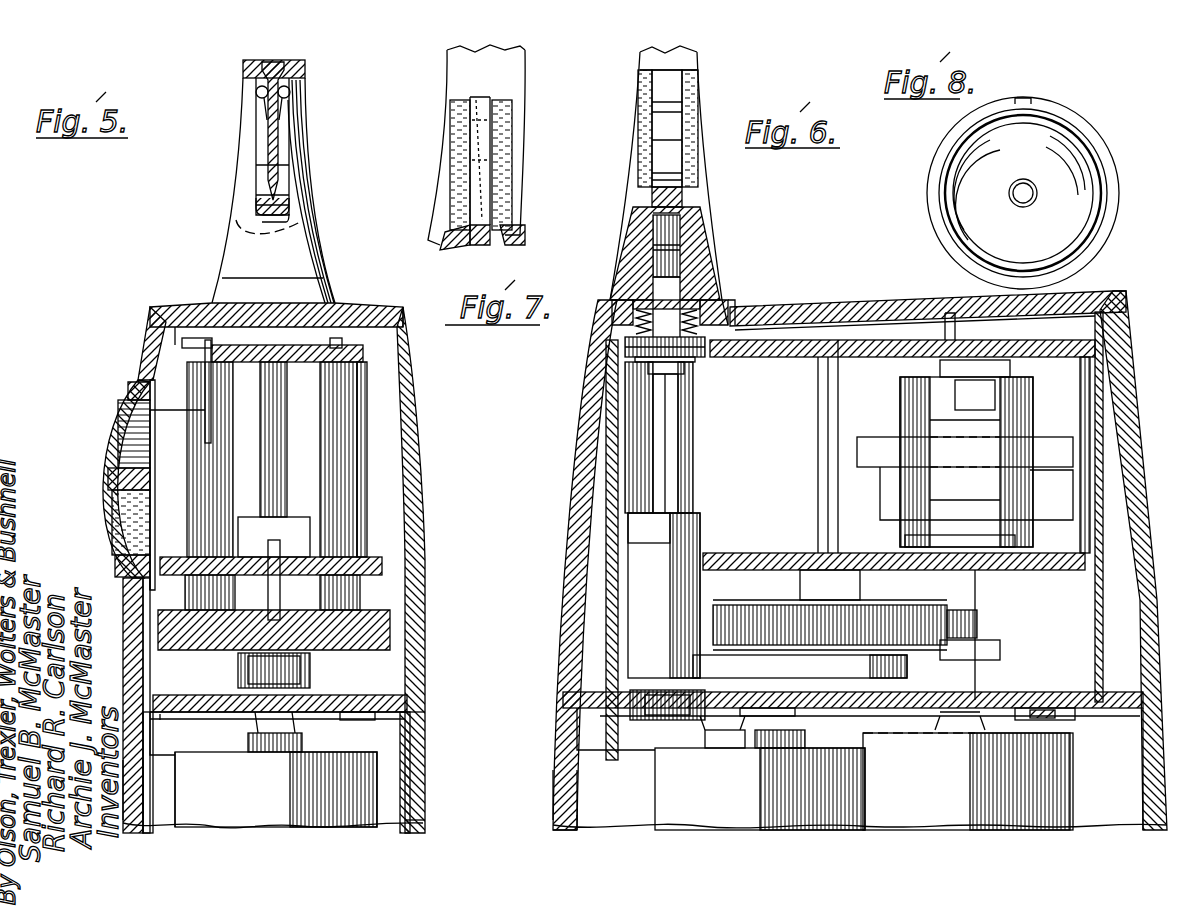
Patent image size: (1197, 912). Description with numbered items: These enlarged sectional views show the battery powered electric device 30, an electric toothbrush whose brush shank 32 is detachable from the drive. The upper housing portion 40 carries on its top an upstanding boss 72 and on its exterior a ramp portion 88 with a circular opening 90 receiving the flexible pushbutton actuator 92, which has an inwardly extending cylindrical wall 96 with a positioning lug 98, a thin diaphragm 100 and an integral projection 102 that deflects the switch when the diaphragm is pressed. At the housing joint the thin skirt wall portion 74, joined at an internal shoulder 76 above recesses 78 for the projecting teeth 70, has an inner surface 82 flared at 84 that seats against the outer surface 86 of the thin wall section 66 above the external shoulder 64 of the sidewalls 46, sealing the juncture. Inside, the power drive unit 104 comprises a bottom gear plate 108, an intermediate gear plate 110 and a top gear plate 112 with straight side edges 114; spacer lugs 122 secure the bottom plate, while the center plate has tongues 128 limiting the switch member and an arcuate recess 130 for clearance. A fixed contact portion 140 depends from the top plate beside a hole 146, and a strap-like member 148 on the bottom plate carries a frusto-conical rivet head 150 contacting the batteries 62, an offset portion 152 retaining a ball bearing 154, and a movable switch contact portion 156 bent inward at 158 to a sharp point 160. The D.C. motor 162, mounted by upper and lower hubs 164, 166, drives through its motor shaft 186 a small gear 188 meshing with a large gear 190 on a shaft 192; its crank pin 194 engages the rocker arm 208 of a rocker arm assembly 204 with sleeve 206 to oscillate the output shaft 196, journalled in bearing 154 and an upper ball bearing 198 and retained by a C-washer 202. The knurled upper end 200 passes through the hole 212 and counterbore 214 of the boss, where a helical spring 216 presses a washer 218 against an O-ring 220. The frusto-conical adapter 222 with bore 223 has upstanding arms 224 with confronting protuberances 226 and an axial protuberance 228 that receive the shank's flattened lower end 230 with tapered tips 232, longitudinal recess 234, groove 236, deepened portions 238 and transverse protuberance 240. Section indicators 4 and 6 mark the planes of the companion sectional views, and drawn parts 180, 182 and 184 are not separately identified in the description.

In FIG. 6, the section line 4- 4 is at (1160, 372).
In FIG. 5, the section line 6— 6 is at (292, 48).
In FIG. 5, the electric device 30 is at (428, 470).
In FIG. 6, the electric device 30 is at (572, 430).
In FIG. 7, the shank 32 is at (512, 62).
In FIG. 6, the shank 32 is at (682, 55).
In FIG. 5, the upper housing portion 40 is at (412, 390).
In FIG. 6, the upper housing portion 40 is at (1135, 388).
In FIG. 5, the sidewalls 46 is at (427, 830).
In FIG. 6, the sidewalls 46 is at (580, 820).
In FIG. 5, the batteries 62 is at (380, 775).
In FIG. 6, the batteries 62 is at (660, 775).
In FIG. 5, the external shoulder 64 is at (427, 800).
In FIG. 6, the external shoulder 64 is at (553, 818).
In FIG. 5, the thin wall section 66 is at (400, 742).
In FIG. 5, the projecting teeth 70 is at (150, 727).
In FIG. 5, the upstanding boss 72 is at (318, 296).
In FIG. 6, the upstanding boss 72 is at (726, 300).
In FIG. 5, the thin wall portion 74 is at (150, 774).
In FIG. 5, the internal shoulder 76 is at (160, 712).
In FIG. 6, the internal shoulder 76 is at (570, 700).
In FIG. 5, the recesses 78 is at (195, 700).
In FIG. 5, the inner surface 82 is at (160, 750).
In FIG. 6, the inner surface 82 is at (565, 725).
In FIG. 5, the flared portion 84 is at (135, 814).
In FIG. 6, the flared portion 84 is at (555, 790).
In FIG. 5, the outer surface 86 is at (148, 794).
In FIG. 6, the outer surface 86 is at (575, 790).
In FIG. 5, the ramp portion 88 is at (125, 590).
In FIG. 5, the circular opening 90 is at (150, 597).
In FIG. 5, the pushbutton actuator 92 is at (100, 508).
In FIG. 8, the pushbutton actuator 92 is at (1118, 152).
In FIG. 5, the cylindrical wall 96 is at (120, 475).
In FIG. 8, the cylindrical wall 96 is at (947, 172).
In FIG. 5, the lug 98 is at (150, 360).
In FIG. 8, the lug 98 is at (1023, 97).
In FIG. 5, the diaphragm 100 is at (125, 405).
In FIG. 8, the diaphragm 100 is at (1080, 137).
In FIG. 5, the integral projection 102 is at (140, 485).
In FIG. 8, the integral projection 102 is at (1025, 180).
In FIG. 5, the power drive unit 104 is at (380, 521).
In FIG. 5, the bottom gear plate 108 is at (370, 695).
In FIG. 6, the bottom gear plate 108 is at (1118, 695).
In FIG. 5, the intermediate gear plate 110 is at (215, 555).
In FIG. 6, the intermediate gear plate 110 is at (772, 552).
In FIG. 5, the top gear plate 112 is at (345, 303).
In FIG. 6, the top gear plate 112 is at (780, 307).
In FIG. 6, the straight side edges 114 is at (1092, 498).
In FIG. 5, the lugs 122 is at (378, 716).
In FIG. 6, the lugs 122 is at (1055, 722).
In FIG. 5, the tongues 128 is at (188, 550).
In FIG. 6, the arcuate recess 130 is at (705, 555).
In FIG. 5, the fixed contact portion 140 is at (212, 420).
In FIG. 5, the hole 146 is at (175, 307).
In FIG. 6, the strap-like member 148 is at (780, 708).
In FIG. 5, the frusto-conical rivet head 150 is at (300, 742).
In FIG. 6, the frusto-conical rivet head 150 is at (748, 745).
In FIG. 6, the offset portion 152 is at (655, 730).
In FIG. 6, the ball bearing 154 is at (620, 722).
In FIG. 5, the movable switch contact portion 156 is at (118, 432).
In FIG. 5, the inward deflection 158 is at (132, 398).
In FIG. 5, the sharp point 160 is at (200, 400).
In FIG. 6, the D.C. motor 162 is at (1105, 460).
In FIG. 6, the upper hub 164 is at (948, 320).
In FIG. 6, the lower hub 166 is at (1015, 543).
In FIG. 6, the solenoid 180 is at (990, 398).
In FIG. 6, the gear housing 182 is at (990, 640).
In FIG. 6, the gear shaft 184 is at (965, 725).
In FIG. 6, the motor shaft 186 is at (960, 590).
In FIG. 6, the small gear 188 is at (980, 612).
In FIG. 6, the large gear 190 is at (765, 600).
In FIG. 5, the shaft 192 is at (272, 545).
In FIG. 6, the shaft 192 is at (830, 453).
In FIG. 6, the crank pin 194 is at (752, 678).
In FIG. 5, the output shaft 196 is at (285, 430).
In FIG. 6, the output shaft 196 is at (665, 437).
In FIG. 6, the ball bearing 198 is at (690, 358).
In FIG. 6, the knurled upper end 200 is at (682, 228).
In FIG. 6, the C-washer 202 is at (686, 376).
In FIG. 6, the rocker arm assembly 204 is at (710, 518).
In FIG. 6, the elongated sleeve 206 is at (640, 568).
In FIG. 5, the rocker arm 208 is at (360, 635).
In FIG. 6, the rocker arm 208 is at (855, 668).
In FIG. 6, the hole 212 is at (630, 300).
In FIG. 6, the counterbore 214 is at (625, 340).
In FIG. 6, the helical spring 216 is at (632, 358).
In FIG. 6, the washer 218 is at (630, 315).
In FIG. 6, the O-ring 220 is at (685, 250).
In FIG. 5, the adapter 222 is at (318, 210).
In FIG. 6, the adapter 222 is at (625, 230).
In FIG. 6, the bore 223 is at (648, 262).
In FIG. 5, the upstanding arms 224 is at (256, 138).
In FIG. 5, the confronting protuberances 226 is at (290, 90).
In FIG. 5, the axial protuberance 228 is at (292, 178).
In FIG. 6, the axial protuberance 228 is at (650, 195).
In FIG. 5, the flattened lower end 230 is at (266, 160).
In FIG. 7, the flattened lower end 230 is at (450, 183).
In FIG. 5, the tapered tips 232 is at (256, 218).
In FIG. 7, the tapered tips 232 is at (440, 250).
In FIG. 7, the longitudinal recess 234 is at (480, 250).
In FIG. 7, the longitudinal groove 236 is at (500, 150).
In FIG. 5, the deepened portions 238 is at (302, 62).
In FIG. 7, the deepened portions 238 is at (495, 108).
In FIG. 5, the transverse protuberance 240 is at (288, 115).
In FIG. 7, the transverse protuberance 240 is at (475, 122).